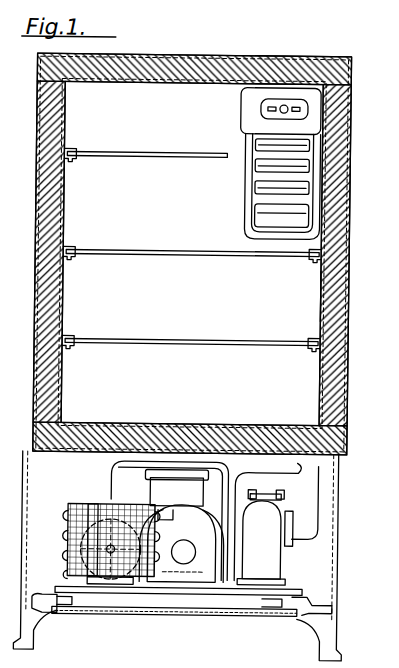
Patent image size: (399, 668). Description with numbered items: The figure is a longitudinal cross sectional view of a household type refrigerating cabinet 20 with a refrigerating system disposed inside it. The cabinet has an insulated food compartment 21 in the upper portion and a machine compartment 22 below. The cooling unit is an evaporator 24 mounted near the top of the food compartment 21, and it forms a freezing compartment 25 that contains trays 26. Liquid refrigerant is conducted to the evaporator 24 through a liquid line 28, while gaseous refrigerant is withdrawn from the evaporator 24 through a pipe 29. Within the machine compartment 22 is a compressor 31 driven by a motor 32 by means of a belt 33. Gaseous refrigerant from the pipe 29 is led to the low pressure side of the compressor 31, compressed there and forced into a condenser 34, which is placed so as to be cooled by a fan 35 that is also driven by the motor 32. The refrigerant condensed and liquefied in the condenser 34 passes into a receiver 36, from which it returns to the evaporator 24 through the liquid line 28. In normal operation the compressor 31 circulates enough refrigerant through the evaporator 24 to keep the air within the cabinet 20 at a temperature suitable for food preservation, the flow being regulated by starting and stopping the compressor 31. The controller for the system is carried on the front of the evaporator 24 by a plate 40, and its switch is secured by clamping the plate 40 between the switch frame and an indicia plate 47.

The refrigerating cabinet 20 is at (194, 58).
The insulated food compartment 21 is at (300, 306).
The machine compartment 22 is at (330, 539).
The evaporator 24 is at (243, 176).
The freezing compartment 25 is at (252, 211).
The trays 26 is at (265, 222).
The liquid line 28 is at (318, 501).
The pipe 29 is at (335, 476).
The compressor 31 is at (185, 592).
The motor 32 is at (90, 505).
The belt 33 is at (181, 525).
The condenser 34 is at (68, 512).
The fan 35 is at (126, 582).
The receiver 36 is at (265, 572).
The plate 40 is at (293, 86).
The indicia plate 47 is at (258, 107).